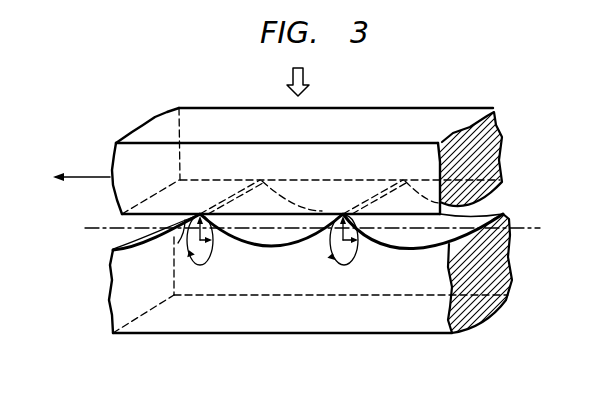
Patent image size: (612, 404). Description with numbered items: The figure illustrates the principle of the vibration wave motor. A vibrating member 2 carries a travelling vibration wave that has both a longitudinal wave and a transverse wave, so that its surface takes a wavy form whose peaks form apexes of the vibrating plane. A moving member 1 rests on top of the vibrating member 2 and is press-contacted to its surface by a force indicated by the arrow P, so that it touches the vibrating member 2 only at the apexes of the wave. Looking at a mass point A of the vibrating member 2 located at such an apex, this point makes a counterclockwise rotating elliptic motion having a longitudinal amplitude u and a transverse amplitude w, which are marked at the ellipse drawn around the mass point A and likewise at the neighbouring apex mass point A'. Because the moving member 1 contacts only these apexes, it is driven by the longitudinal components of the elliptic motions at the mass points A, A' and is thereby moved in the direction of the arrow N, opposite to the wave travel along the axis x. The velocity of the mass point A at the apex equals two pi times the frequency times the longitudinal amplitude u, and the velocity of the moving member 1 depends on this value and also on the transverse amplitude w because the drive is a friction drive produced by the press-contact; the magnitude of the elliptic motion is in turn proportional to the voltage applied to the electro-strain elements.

The moving member 1 is at (407, 122).
The vibrating member 2 is at (207, 320).
The mass point A is at (200, 208).
The mass point A' is at (346, 207).
The press-contact arrow P is at (305, 82).
The direction of movement arrow N is at (70, 177).
The reference axis x is at (320, 229).
The transverse amplitude w is at (178, 243).
The longitudinal amplitude u is at (212, 255).